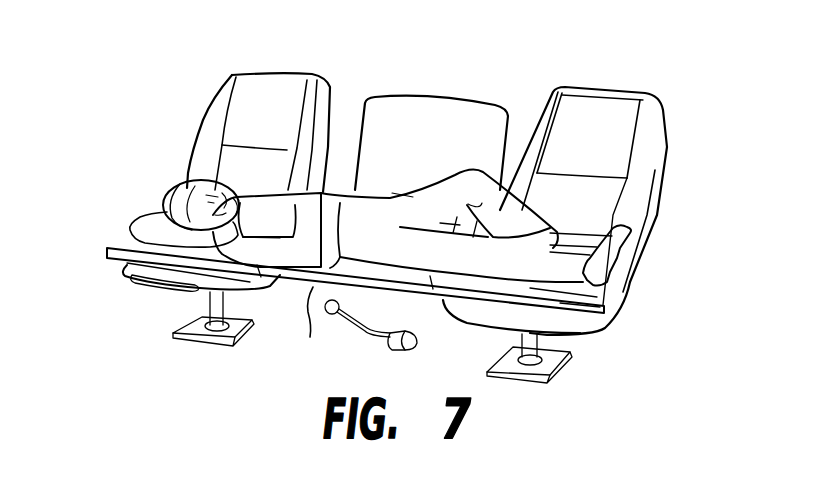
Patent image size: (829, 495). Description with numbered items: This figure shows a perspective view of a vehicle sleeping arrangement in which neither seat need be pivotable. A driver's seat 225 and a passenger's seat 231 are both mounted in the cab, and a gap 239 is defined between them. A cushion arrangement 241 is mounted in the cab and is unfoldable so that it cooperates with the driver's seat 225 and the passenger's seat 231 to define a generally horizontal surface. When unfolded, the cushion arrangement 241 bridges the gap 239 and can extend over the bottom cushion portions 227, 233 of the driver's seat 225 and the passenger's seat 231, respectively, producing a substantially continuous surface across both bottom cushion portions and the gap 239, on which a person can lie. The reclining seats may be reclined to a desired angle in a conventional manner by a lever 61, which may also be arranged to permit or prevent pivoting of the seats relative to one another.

The lever 61 is at (168, 292).
The driver's seat 225 is at (667, 88).
The bottom cushion portion 227 is at (620, 293).
The passenger's seat 231 is at (338, 76).
The bottom cushion portion 233 is at (125, 266).
The gap 239 is at (310, 337).
The cushion arrangement 241 is at (455, 120).